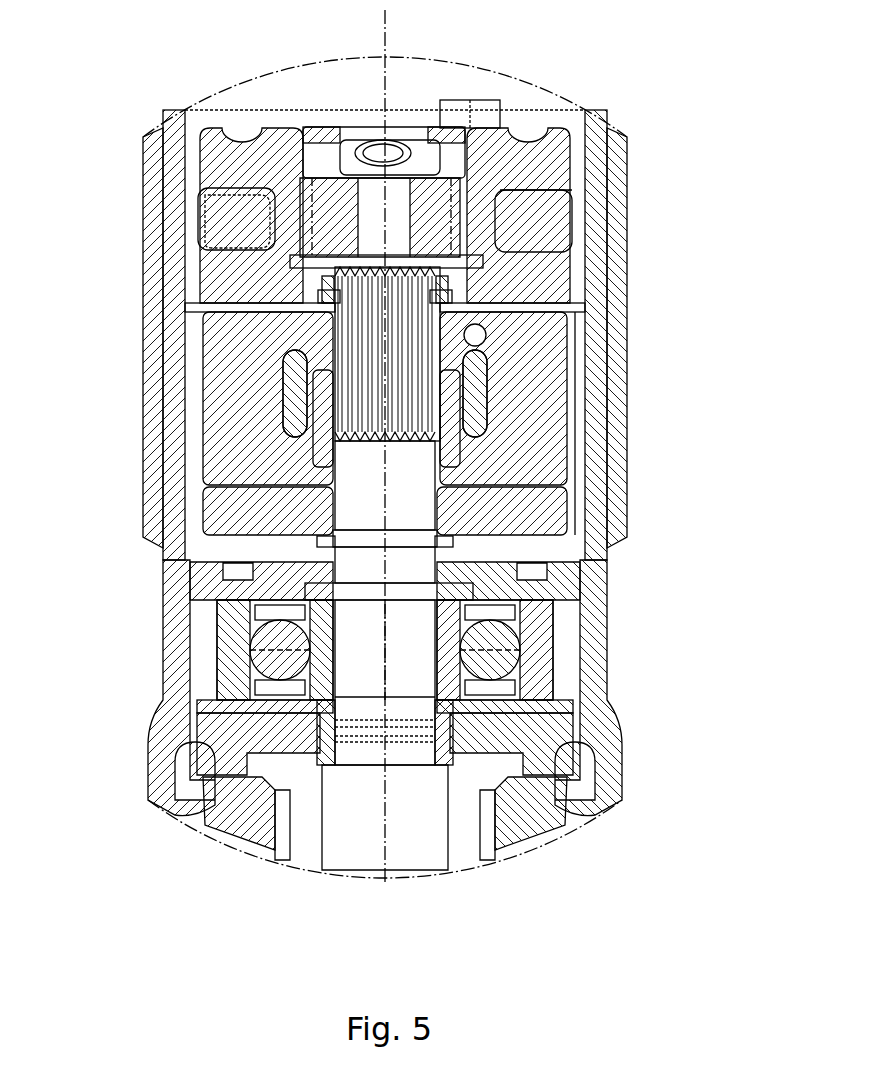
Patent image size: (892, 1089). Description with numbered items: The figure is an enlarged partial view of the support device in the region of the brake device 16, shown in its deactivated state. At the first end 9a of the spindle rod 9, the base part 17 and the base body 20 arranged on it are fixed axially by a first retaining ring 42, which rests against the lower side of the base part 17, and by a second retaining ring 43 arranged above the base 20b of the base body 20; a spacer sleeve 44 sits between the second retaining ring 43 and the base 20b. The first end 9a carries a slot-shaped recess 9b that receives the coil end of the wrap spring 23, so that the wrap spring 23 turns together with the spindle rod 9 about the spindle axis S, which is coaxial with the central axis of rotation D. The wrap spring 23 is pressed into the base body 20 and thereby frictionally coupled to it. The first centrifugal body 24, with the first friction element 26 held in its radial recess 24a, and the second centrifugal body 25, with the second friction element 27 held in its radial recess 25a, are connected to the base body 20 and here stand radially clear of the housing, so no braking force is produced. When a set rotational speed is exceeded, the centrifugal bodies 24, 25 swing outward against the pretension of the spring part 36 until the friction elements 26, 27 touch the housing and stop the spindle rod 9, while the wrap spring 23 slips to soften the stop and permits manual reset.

The spindle rod 9 is at (410, 630).
The first end 9a is at (370, 460).
The slot-shaped recess 9b is at (355, 338).
The brake device 16 is at (578, 437).
The base part 17 is at (548, 512).
The base body 20 is at (550, 378).
The base 20b is at (447, 318).
The wrap spring 23 is at (290, 400).
The first centrifugal body 24 is at (210, 160).
The radial recess 24a is at (228, 185).
The second centrifugal body 25 is at (560, 163).
The radial recess 25a is at (567, 188).
The first friction element 26 is at (205, 218).
The second friction element 27 is at (563, 228).
The spring part 36 is at (420, 160).
The first retaining ring 42 is at (320, 540).
The second retaining ring 43 is at (318, 297).
The spacer sleeve 44 is at (320, 292).
The spindle axis S is at (380, 652).
The central axis of rotation D is at (385, 697).